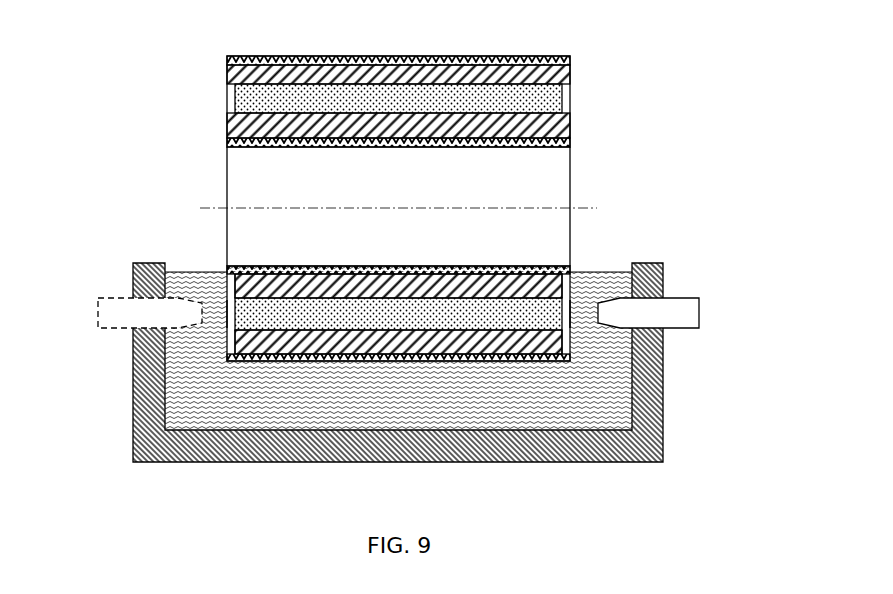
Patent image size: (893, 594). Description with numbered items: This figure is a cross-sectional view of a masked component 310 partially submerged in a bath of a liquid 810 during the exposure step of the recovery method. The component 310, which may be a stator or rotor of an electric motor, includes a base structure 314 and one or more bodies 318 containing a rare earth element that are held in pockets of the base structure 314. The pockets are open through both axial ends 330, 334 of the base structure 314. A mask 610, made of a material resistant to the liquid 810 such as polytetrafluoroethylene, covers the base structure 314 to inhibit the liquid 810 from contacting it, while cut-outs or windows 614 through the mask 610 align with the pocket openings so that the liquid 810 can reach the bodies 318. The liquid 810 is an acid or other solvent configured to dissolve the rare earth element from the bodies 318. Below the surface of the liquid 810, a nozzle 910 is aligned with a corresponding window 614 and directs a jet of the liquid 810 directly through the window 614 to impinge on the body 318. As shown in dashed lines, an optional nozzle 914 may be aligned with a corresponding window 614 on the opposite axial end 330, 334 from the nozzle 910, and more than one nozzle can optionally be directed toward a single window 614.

The component 310 is at (388, 252).
The mask 610 is at (370, 57).
The body 318 is at (460, 96).
The axial end 334 is at (235, 128).
The axial end 330 is at (388, 118).
The nozzle 914 is at (189, 300).
The nozzle 910 is at (618, 281).
The window 614 is at (227, 323).
The liquid 810 is at (607, 397).
The base structure 314 is at (268, 347).